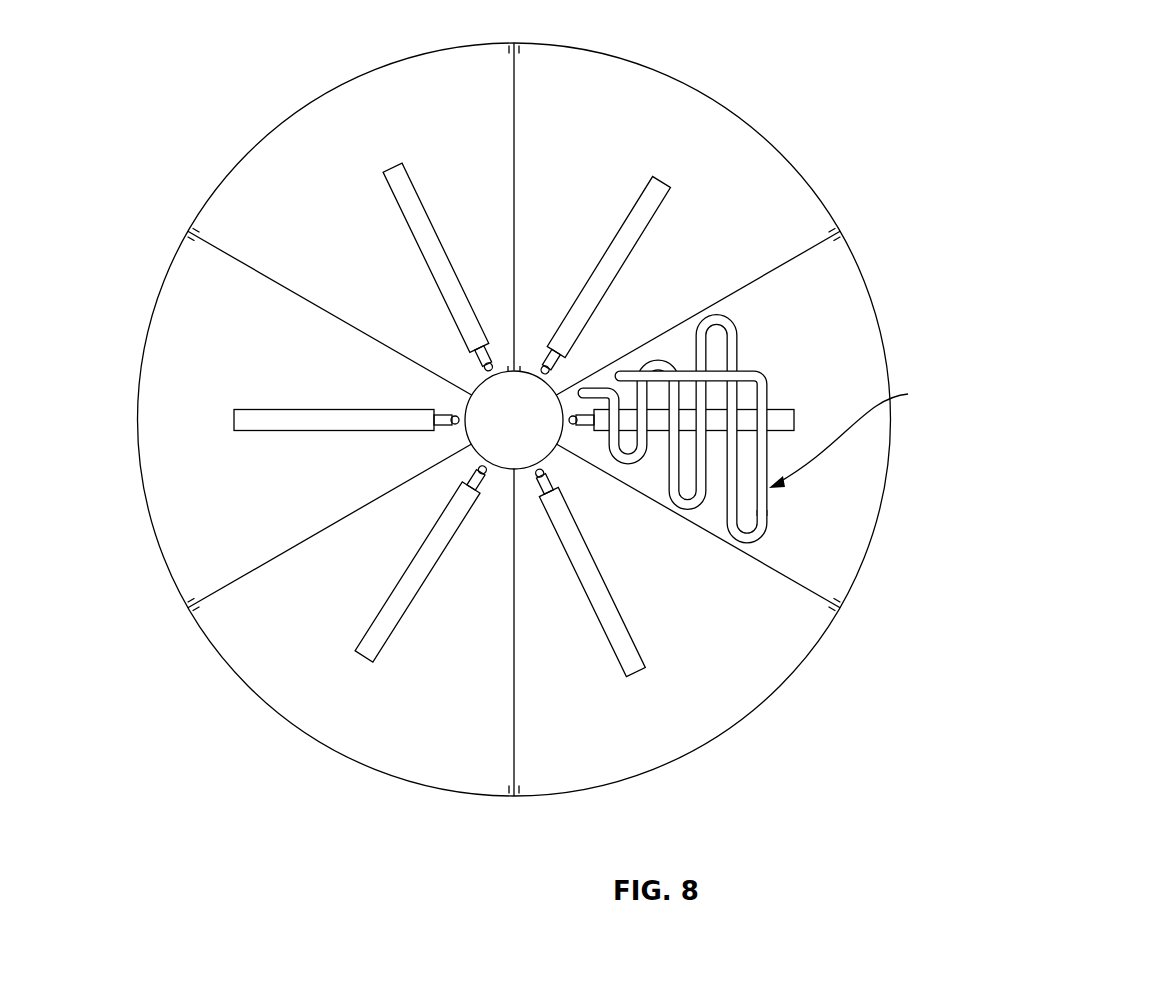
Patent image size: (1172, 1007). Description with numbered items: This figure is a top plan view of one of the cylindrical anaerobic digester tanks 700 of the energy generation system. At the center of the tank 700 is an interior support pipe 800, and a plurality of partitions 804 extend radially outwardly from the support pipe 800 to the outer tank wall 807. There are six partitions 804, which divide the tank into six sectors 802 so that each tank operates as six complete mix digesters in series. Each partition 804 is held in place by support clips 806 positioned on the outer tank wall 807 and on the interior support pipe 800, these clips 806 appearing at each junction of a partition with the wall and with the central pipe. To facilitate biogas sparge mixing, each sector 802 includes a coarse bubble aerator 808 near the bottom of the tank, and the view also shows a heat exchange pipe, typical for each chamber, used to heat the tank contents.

The cylindrical anaerobic digester tank 700 is at (742, 120).
The interior support pipe 800 is at (480, 378).
The sector 802 is at (294, 165).
The partition 804 is at (513, 166).
The support clip 806 is at (506, 43).
The outer tank wall 807 is at (243, 157).
The coarse bubble aerator 808 is at (642, 679).